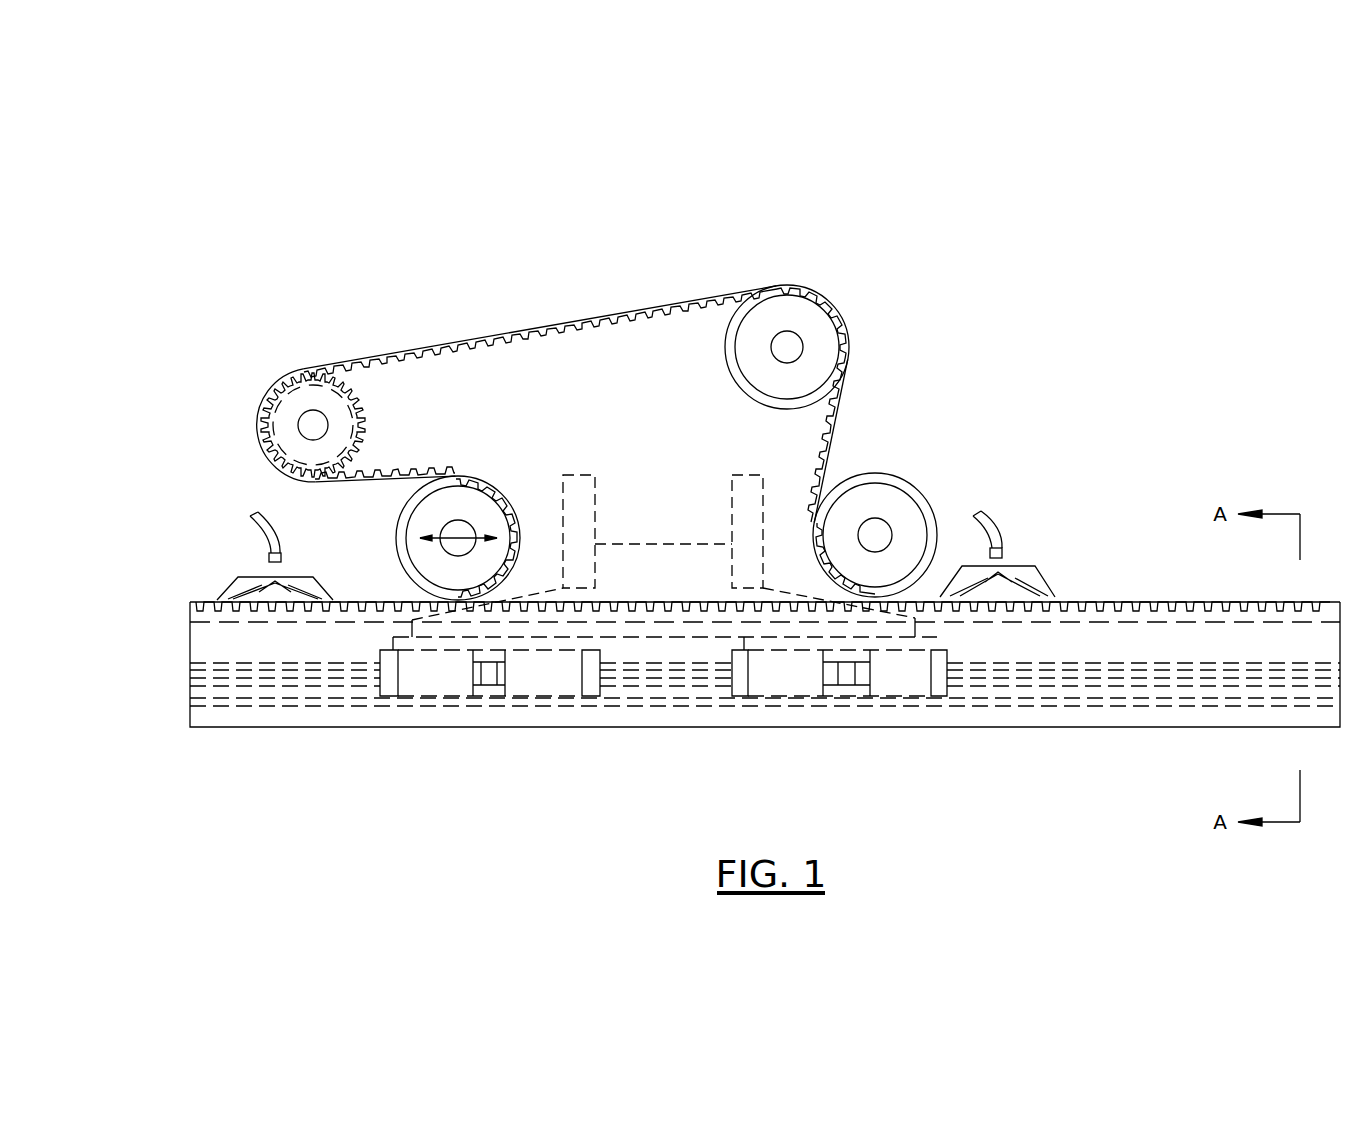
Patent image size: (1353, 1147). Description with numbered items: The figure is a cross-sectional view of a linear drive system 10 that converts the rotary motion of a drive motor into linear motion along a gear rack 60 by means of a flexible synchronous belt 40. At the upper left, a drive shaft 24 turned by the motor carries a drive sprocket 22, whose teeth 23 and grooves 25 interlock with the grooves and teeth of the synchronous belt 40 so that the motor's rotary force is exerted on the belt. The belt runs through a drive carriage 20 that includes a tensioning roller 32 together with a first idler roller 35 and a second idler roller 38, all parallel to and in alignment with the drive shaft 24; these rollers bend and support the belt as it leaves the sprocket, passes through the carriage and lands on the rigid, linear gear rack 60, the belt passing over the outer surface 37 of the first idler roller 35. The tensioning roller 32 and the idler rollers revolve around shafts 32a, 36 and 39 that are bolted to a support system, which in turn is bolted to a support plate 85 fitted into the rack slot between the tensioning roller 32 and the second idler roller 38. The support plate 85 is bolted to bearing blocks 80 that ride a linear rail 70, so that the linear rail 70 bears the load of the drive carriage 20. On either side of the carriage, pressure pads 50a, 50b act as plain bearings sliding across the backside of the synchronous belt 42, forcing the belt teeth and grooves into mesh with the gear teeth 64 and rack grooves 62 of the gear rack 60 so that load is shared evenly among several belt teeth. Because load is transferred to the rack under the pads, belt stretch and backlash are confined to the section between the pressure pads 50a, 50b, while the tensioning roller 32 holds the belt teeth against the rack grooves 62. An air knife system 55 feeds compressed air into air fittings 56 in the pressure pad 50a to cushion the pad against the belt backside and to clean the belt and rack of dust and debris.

The linear drive system 10 is at (465, 268).
The drive carriage 20 is at (268, 373).
The drive sprocket 22 is at (363, 397).
The teeth 23 is at (362, 410).
The drive shaft 24 is at (308, 423).
The grooves 25 is at (372, 443).
The tensioning roller 32 is at (437, 562).
The shaft 32a is at (473, 527).
The first idler roller 35 is at (816, 330).
The shaft 36 is at (797, 349).
The outer surface 37 is at (790, 401).
The second idler roller 38 is at (858, 505).
The shaft 39 is at (882, 540).
The synchronous belt 40 is at (588, 307).
The backside of the synchronous belt 42 is at (788, 287).
The pressure pad 50a is at (1047, 572).
The pressure pad 50b is at (222, 578).
The air knife system 55 is at (1000, 520).
The air fittings 56 is at (1018, 594).
The gear rack 60 is at (641, 620).
The rack grooves 62 is at (693, 607).
The gear teeth 64 is at (657, 608).
The linear rail 70 is at (1205, 705).
The bearing blocks 80 is at (787, 678).
The support plate 85 is at (742, 508).